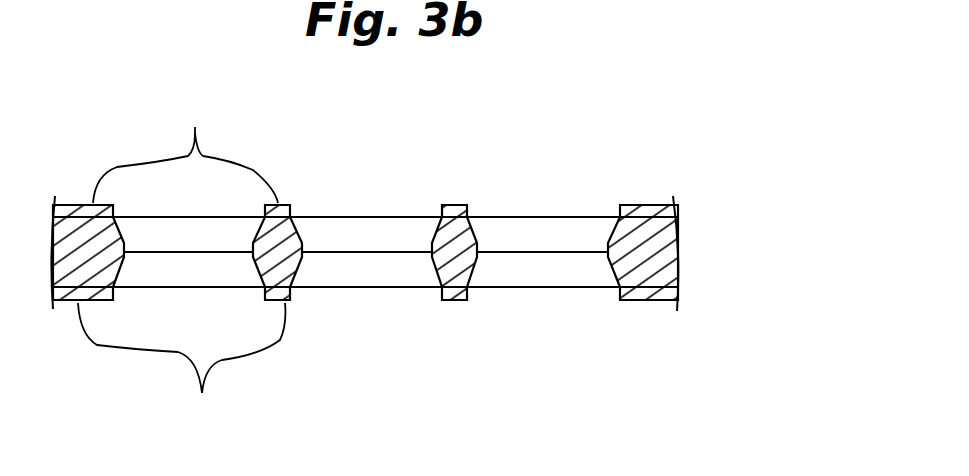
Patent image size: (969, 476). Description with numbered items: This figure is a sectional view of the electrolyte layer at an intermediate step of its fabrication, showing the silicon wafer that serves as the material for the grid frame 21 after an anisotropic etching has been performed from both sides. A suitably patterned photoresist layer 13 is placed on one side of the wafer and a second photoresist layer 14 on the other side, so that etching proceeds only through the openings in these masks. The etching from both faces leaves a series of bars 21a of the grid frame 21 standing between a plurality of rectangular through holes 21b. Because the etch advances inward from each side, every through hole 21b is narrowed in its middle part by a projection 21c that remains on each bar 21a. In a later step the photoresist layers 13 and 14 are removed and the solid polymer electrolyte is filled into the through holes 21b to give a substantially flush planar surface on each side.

The photoresist layer 13 is at (185, 149).
The photoresist layer 14 is at (181, 367).
The grid frame 21 is at (403, 266).
The bar 21a is at (427, 218).
The through hole 21b is at (252, 338).
The projection 21c is at (253, 252).